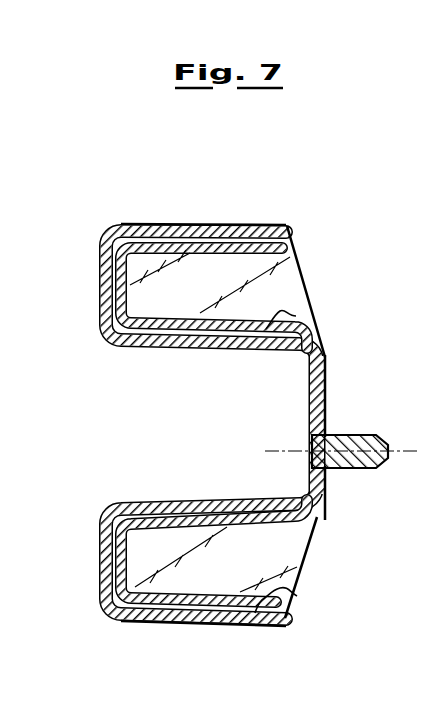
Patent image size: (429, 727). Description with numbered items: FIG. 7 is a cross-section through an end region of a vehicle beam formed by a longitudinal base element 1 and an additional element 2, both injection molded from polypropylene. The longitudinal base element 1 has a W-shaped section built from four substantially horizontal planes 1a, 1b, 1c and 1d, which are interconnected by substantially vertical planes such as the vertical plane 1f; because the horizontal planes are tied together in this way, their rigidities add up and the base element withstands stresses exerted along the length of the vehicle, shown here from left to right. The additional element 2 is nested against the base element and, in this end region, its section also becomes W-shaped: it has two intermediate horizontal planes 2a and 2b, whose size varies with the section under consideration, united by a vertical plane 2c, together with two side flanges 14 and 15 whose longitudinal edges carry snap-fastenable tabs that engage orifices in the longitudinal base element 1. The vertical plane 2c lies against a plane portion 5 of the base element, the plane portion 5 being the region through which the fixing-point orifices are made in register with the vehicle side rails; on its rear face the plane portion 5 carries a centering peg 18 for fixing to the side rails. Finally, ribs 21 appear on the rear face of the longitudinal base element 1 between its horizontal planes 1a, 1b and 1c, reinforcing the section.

The longitudinal base element 1 is at (334, 266).
The horizontal plane 1a is at (233, 240).
The horizontal plane 1b is at (296, 316).
The horizontal plane 1c is at (262, 533).
The horizontal plane 1d is at (297, 596).
The vertical plane 1f is at (322, 398).
The additional element 2 is at (82, 270).
The intermediate horizontal plane 2a is at (188, 347).
The intermediate horizontal plane 2b is at (203, 504).
The vertical plane 2c is at (308, 423).
The plane portion 5 is at (337, 356).
The side flange 14 is at (157, 229).
The side flange 15 is at (190, 621).
The centering peg 18 is at (363, 468).
The rib 21 is at (213, 421).